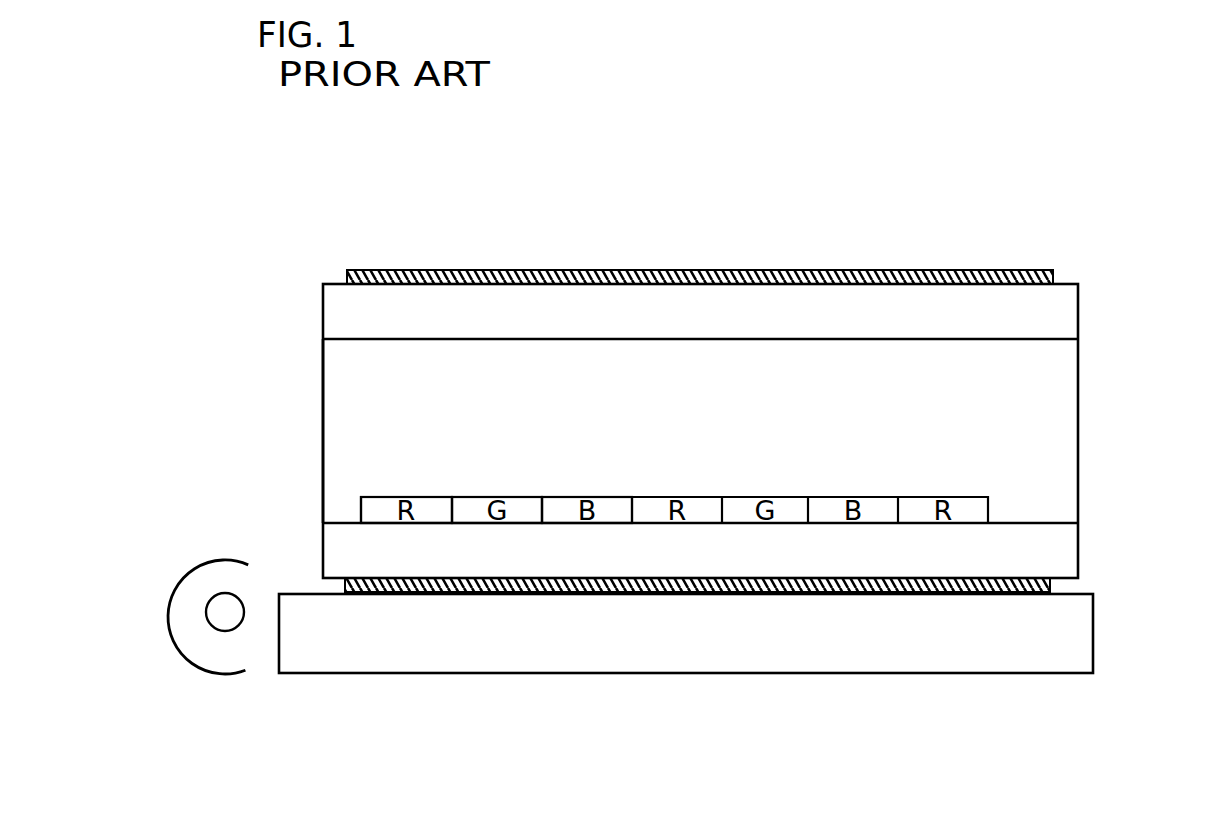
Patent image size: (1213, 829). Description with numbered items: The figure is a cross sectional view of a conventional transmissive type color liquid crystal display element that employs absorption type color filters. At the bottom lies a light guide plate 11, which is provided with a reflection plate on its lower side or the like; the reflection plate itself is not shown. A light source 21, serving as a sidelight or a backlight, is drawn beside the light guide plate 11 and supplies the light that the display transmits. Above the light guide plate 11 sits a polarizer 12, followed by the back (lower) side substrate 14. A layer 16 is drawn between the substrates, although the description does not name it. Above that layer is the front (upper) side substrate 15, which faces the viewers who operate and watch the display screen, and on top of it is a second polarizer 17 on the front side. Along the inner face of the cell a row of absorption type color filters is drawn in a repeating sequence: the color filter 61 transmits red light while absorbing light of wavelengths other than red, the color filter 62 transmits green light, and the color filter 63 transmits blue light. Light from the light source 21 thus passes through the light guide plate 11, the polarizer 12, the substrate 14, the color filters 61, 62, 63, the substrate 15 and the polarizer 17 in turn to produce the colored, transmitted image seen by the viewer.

The light guide plate 11 is at (1047, 638).
The polarizer 12 is at (1037, 597).
The back side substrate 14 is at (340, 543).
The front side substrate 15 is at (350, 310).
The liquid crystal layer 16 is at (370, 430).
The polarizer on the front side 17 is at (515, 270).
The light source 21 is at (214, 627).
The absorption type color filter for transmitting red light 61 is at (422, 497).
The absorption type color filter for transmitting green light 62 is at (508, 497).
The absorption type color filter for transmitting blue light 63 is at (590, 497).